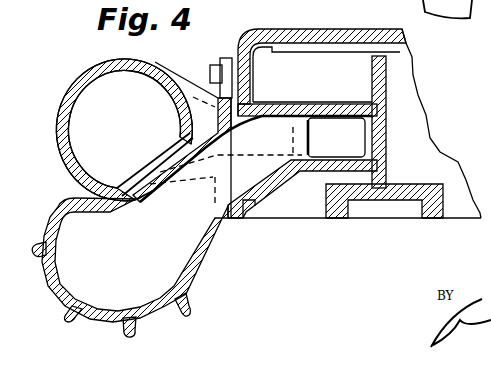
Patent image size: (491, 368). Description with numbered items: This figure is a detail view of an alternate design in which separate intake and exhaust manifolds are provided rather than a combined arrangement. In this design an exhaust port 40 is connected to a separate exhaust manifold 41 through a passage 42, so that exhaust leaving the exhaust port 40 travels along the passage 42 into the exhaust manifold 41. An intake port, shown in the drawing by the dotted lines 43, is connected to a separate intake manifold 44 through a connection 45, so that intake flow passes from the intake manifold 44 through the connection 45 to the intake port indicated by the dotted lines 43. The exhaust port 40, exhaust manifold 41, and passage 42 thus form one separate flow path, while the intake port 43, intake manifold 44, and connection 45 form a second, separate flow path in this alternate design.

The exhaust port 40 is at (367, 143).
The exhaust manifold 41 is at (193, 272).
The passage 42 is at (247, 173).
The intake port 43 is at (340, 104).
The intake manifold 44 is at (90, 72).
The connection 45 is at (235, 155).